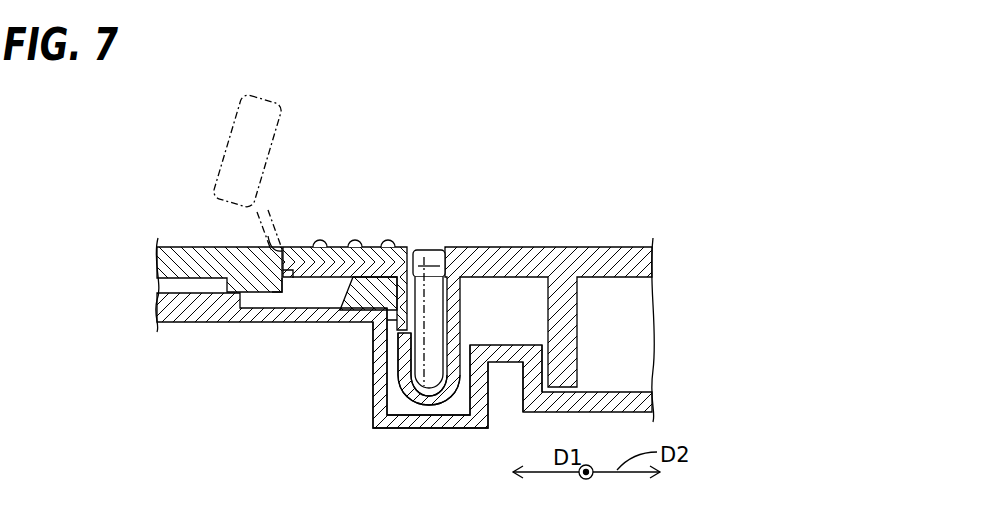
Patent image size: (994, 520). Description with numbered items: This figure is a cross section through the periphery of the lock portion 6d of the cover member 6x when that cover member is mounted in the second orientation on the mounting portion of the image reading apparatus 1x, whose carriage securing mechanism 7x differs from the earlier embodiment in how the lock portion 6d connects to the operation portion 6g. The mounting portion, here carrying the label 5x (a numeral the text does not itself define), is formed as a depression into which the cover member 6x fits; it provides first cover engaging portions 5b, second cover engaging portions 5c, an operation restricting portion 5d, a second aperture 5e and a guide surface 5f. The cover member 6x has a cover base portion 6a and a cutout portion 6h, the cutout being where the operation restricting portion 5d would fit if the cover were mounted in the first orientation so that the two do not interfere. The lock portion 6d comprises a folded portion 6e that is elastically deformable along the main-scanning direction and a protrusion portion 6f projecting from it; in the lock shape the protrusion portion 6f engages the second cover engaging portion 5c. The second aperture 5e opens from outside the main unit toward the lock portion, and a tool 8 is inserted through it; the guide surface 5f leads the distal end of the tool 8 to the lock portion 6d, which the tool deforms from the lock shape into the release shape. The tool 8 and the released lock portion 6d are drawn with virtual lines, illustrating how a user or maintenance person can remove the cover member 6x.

The image reading apparatus 1x is at (688, 136).
The carriage securing mechanism 7x is at (636, 179).
The tool 8 is at (216, 149).
The panel member 5x is at (175, 242).
The first cover engaging portion 5b is at (262, 293).
The second cover engaging portion 5c is at (373, 323).
The operation restricting portion 5d is at (428, 247).
The second aperture 5e is at (283, 249).
The guide surface 5f is at (283, 291).
The cover base portion 6a is at (572, 247).
The lock portion 6d is at (481, 328).
The folded portion 6e is at (430, 406).
The protrusion portion 6f is at (390, 344).
The operation portion 6g is at (353, 241).
The cutout portion 6h is at (333, 283).
The cover member 6x is at (383, 214).